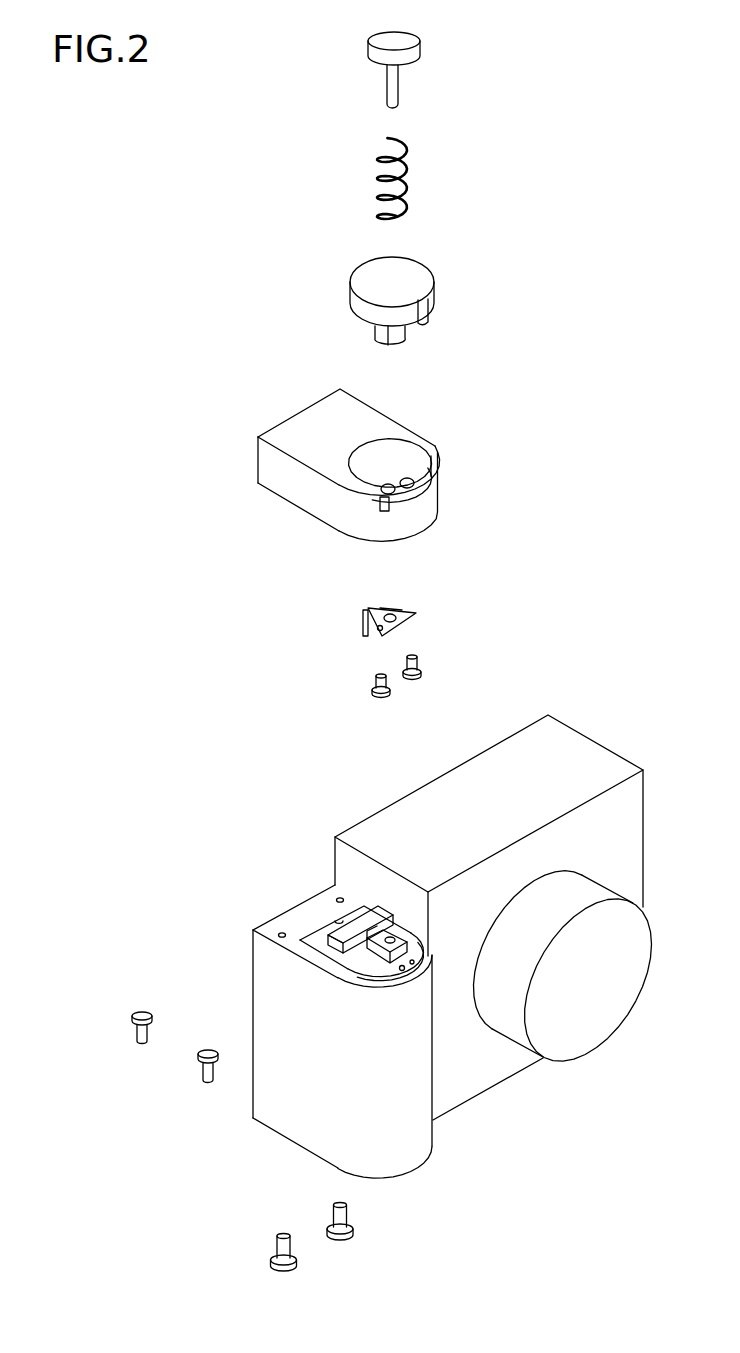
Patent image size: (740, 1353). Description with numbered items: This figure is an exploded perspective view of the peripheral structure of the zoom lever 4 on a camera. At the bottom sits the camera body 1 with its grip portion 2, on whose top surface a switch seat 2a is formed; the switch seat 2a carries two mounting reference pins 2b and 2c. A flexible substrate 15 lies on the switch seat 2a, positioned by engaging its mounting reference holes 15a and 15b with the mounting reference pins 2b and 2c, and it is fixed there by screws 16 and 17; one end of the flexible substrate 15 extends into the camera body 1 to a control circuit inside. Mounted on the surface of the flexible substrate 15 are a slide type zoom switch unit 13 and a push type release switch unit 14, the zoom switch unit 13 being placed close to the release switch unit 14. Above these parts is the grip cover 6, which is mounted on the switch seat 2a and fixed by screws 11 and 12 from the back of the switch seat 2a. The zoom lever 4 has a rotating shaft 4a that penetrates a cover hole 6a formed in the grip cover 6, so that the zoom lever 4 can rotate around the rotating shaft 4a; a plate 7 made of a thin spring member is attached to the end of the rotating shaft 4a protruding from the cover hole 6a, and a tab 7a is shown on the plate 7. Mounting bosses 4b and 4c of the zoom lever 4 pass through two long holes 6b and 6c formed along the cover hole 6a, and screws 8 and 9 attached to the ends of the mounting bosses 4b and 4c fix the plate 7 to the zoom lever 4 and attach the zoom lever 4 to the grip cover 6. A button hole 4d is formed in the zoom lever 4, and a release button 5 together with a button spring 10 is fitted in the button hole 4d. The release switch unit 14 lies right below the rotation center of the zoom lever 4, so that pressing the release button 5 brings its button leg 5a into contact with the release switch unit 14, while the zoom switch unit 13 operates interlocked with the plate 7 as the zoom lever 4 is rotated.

The camera body 1 is at (580, 742).
The grip portion 2 is at (420, 1147).
The switch seat 2a is at (433, 1120).
The mounting reference pin 2b is at (362, 943).
The mounting reference pin 2c is at (339, 922).
The zoom lever 4 is at (350, 296).
The rotating shaft 4a is at (400, 342).
The mounting boss 4b is at (378, 337).
The mounting boss 4c is at (430, 324).
The button hole 4d is at (373, 273).
The release button 5 is at (418, 44).
The button leg 5a is at (398, 98).
The grip cover 6 is at (273, 458).
The cover hole 6a is at (395, 493).
The long hole 6b is at (390, 508).
The long hole 6c is at (417, 485).
The plate 7 is at (364, 628).
The tab 7a is at (368, 613).
The screw 8 is at (374, 683).
The screw 9 is at (418, 661).
The button spring 10 is at (377, 165).
The screw 11 is at (275, 1250).
The screw 12 is at (350, 1214).
The zoom switch unit 13 is at (382, 908).
The release switch unit 14 is at (433, 950).
The flexible substrate 15 is at (360, 905).
The mounting reference hole 15a is at (427, 960).
The mounting reference hole 15b is at (326, 925).
The screw 16 is at (201, 1073).
The screw 17 is at (137, 1033).